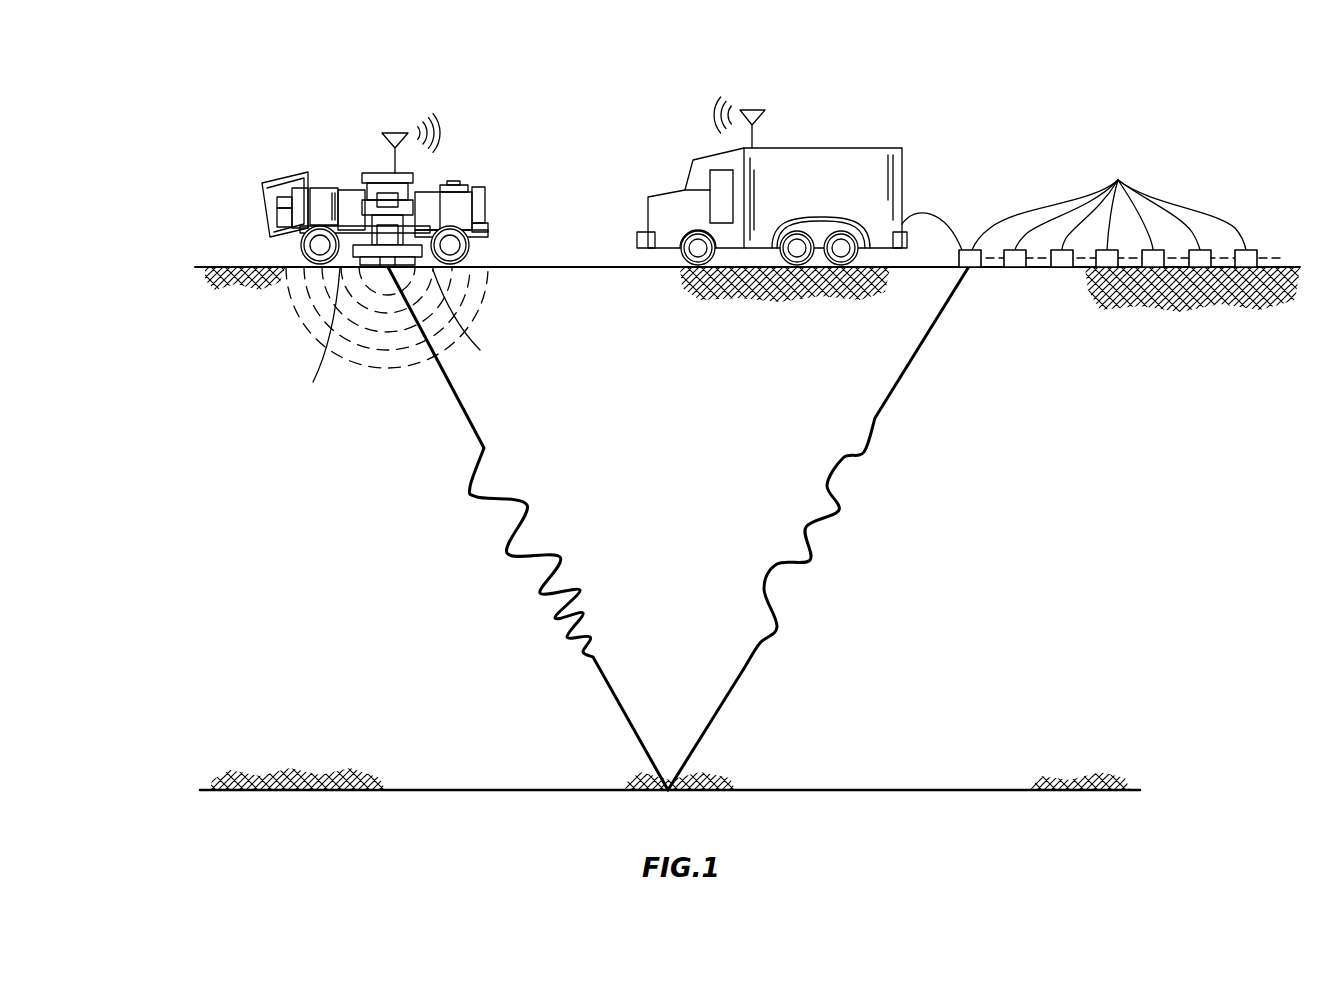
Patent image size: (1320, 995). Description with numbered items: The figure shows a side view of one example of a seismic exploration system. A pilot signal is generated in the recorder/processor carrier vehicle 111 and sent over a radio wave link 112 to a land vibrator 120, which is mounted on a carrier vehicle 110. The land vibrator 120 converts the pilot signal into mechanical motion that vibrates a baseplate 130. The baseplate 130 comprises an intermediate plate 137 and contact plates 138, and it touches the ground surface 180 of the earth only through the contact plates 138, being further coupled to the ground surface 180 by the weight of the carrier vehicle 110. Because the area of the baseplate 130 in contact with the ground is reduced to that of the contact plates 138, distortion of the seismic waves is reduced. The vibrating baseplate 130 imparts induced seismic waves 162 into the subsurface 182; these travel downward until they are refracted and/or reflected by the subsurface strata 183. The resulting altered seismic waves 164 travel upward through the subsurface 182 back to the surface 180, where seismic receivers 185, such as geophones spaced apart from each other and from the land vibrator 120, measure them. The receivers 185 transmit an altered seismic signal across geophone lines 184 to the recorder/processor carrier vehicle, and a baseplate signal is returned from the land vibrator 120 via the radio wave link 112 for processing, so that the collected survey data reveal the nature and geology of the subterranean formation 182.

The carrier vehicle 110 is at (282, 178).
The recorder/processor carrier vehicle 111 is at (875, 147).
The radio wave link 112 is at (707, 90).
The land vibrator 120 is at (462, 113).
The baseplate 130 is at (436, 270).
The intermediate plate 137 is at (338, 267).
The contact plates 138 is at (394, 337).
The induced seismic waves 162 is at (457, 403).
The altered seismic waves 164 is at (920, 365).
The ground surface 180 is at (227, 266).
The subsurface 182 is at (348, 631).
The subsurface strata 183 is at (955, 790).
The geophone lines 184 is at (922, 212).
The seismic receivers 185 is at (1120, 208).